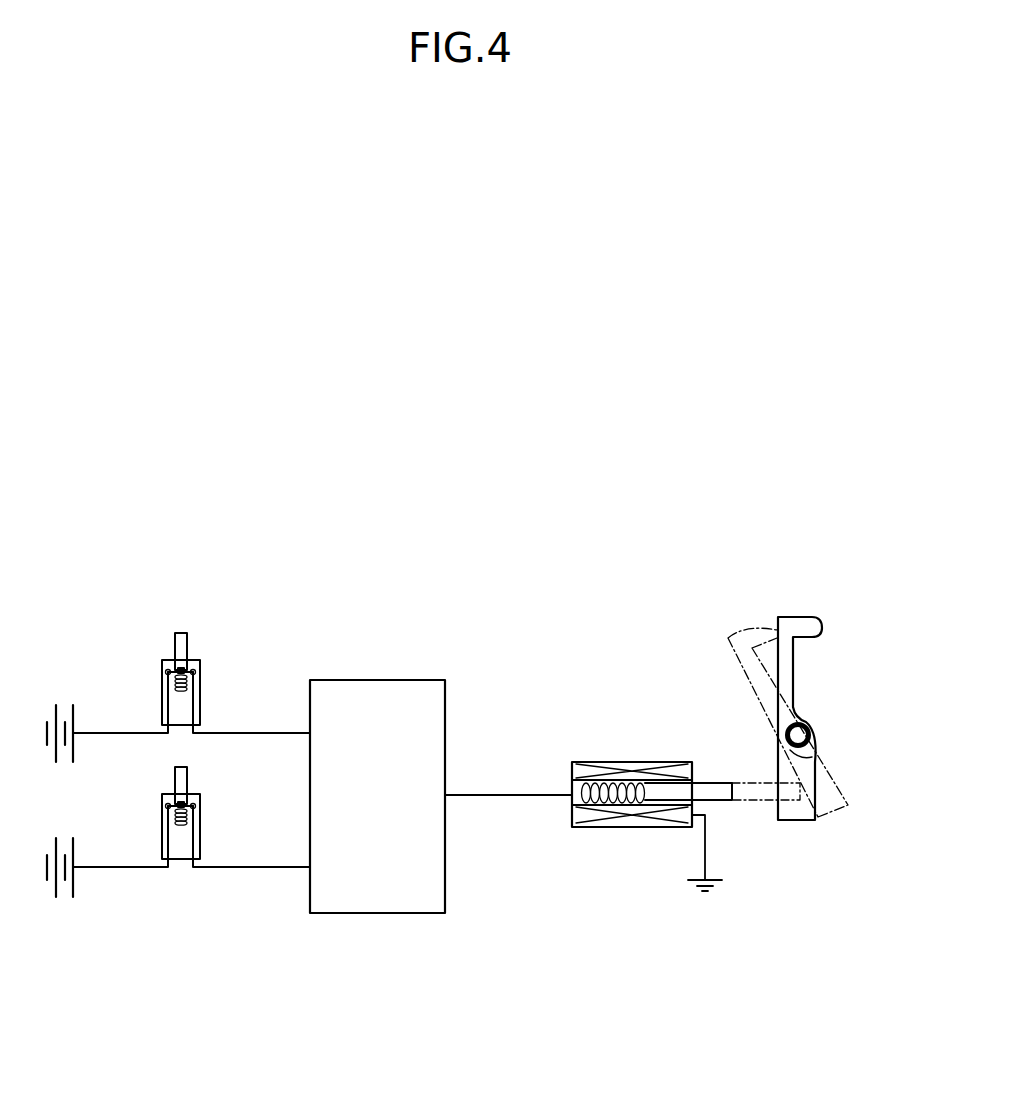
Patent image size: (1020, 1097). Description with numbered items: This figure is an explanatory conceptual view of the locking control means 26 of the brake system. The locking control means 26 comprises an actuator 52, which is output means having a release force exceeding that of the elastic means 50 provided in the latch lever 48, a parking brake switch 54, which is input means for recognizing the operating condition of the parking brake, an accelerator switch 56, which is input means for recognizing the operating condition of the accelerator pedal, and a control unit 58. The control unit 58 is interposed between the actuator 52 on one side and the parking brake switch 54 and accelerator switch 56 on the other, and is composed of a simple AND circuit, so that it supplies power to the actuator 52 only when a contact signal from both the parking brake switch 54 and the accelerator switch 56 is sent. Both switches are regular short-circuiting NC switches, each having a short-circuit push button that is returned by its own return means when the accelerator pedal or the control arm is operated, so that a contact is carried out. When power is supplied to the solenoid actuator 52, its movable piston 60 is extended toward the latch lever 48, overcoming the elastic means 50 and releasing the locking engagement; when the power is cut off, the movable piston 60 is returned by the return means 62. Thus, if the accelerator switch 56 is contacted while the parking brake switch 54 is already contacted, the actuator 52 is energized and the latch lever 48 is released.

The locking control means 26 is at (455, 640).
The latch lever 48 is at (802, 617).
The elastic means 50 is at (818, 772).
The actuator 52 is at (629, 757).
The parking brake switch 54 is at (200, 708).
The accelerator switch 56 is at (203, 840).
The control unit 58 is at (447, 737).
The movable piston 60 is at (713, 802).
The return means 62 is at (583, 792).